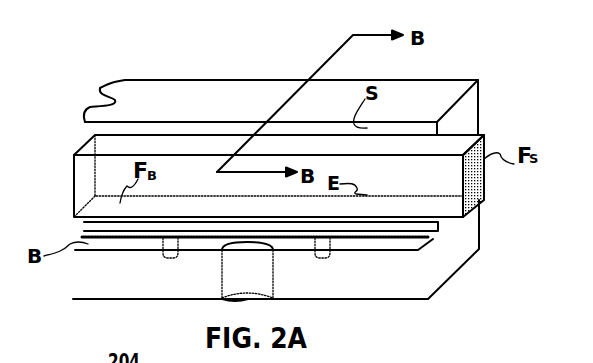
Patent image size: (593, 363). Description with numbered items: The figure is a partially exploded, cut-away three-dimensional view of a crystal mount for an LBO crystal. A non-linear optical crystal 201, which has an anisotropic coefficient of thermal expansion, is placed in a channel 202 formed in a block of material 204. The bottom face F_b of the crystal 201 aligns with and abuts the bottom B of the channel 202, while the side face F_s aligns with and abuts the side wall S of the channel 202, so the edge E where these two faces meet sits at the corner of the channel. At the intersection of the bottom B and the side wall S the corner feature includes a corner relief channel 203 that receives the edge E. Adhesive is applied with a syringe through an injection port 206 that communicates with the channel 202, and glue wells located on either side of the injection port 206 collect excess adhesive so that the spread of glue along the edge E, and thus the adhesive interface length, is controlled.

The non-linear optical crystal 201 is at (464, 137).
The channel 202 is at (79, 131).
The corner relief channel 203 is at (440, 235).
The block of material 204 is at (180, 95).
The injection port 206 is at (275, 276).